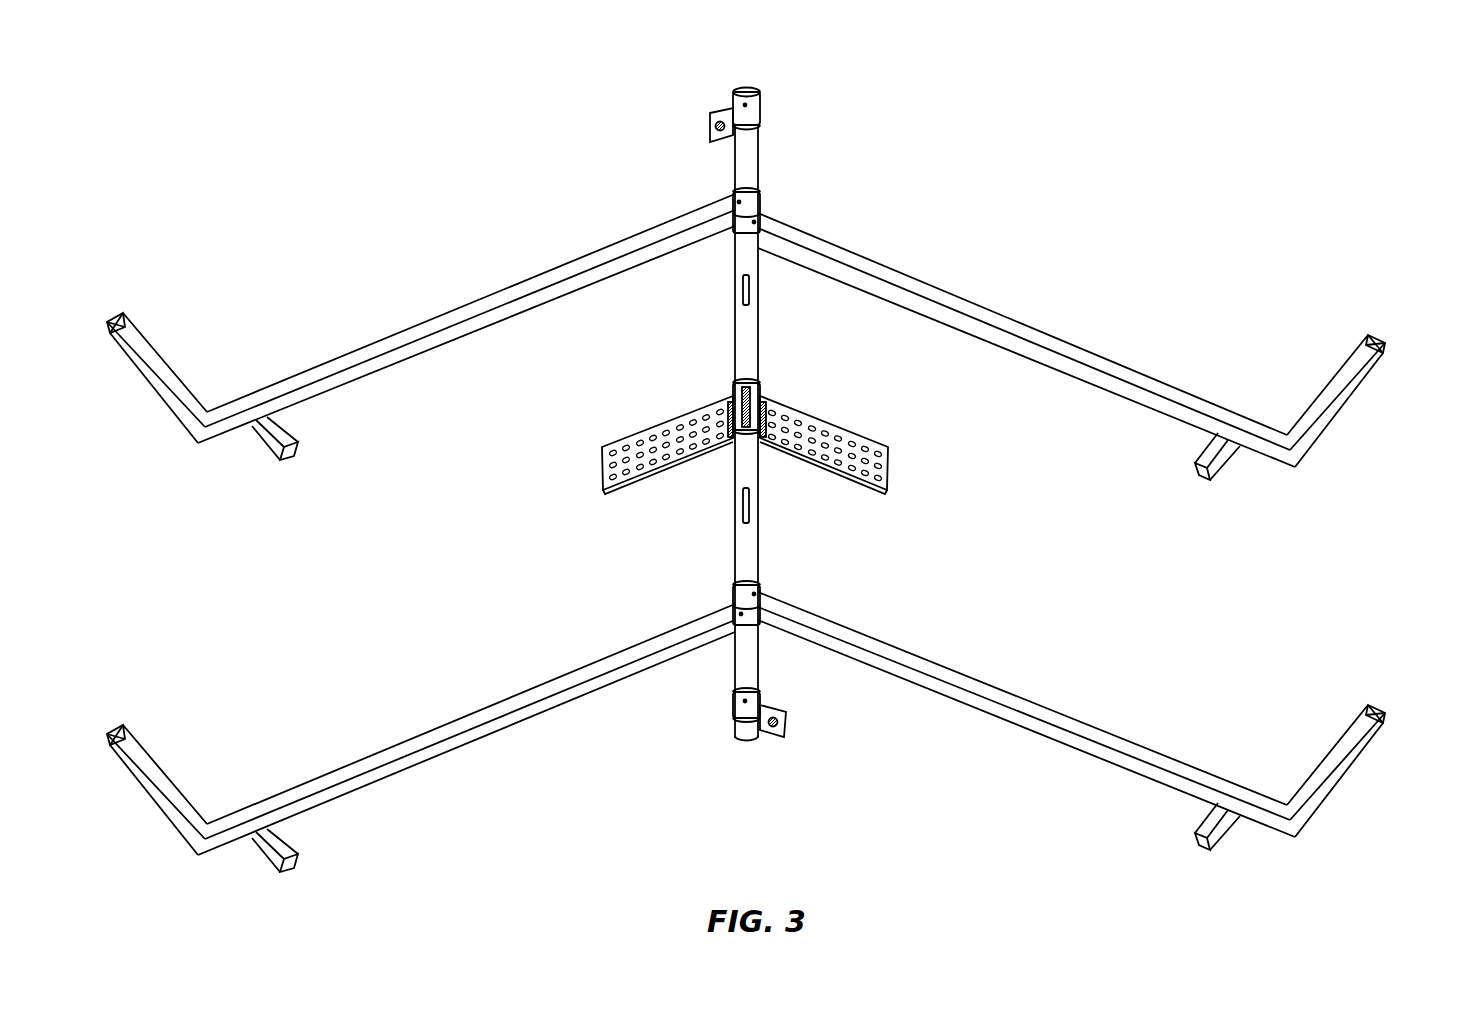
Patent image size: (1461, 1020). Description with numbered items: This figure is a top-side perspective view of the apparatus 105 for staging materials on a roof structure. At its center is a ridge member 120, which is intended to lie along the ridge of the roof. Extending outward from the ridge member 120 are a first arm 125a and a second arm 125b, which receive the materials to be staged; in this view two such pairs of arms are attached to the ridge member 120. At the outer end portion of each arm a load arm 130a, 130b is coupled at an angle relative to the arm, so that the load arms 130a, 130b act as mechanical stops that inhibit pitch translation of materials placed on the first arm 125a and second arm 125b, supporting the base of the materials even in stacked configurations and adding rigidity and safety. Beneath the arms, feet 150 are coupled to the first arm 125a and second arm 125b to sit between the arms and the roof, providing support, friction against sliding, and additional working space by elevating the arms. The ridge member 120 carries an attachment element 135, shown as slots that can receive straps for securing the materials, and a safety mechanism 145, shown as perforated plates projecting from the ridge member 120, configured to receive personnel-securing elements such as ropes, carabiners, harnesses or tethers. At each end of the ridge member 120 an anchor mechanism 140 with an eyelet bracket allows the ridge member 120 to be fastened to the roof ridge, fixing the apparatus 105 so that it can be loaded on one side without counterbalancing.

The apparatus 105 is at (1352, 118).
The ridge member 120 is at (757, 352).
The first arm 125a is at (1084, 355).
The second arm 125b is at (450, 318).
The load arm 130a is at (1350, 380).
The load arm 130b is at (140, 372).
The attachment element 135 is at (742, 292).
The anchor mechanism 140 is at (752, 107).
The safety mechanism 145 is at (598, 470).
The feet 150 is at (272, 440).